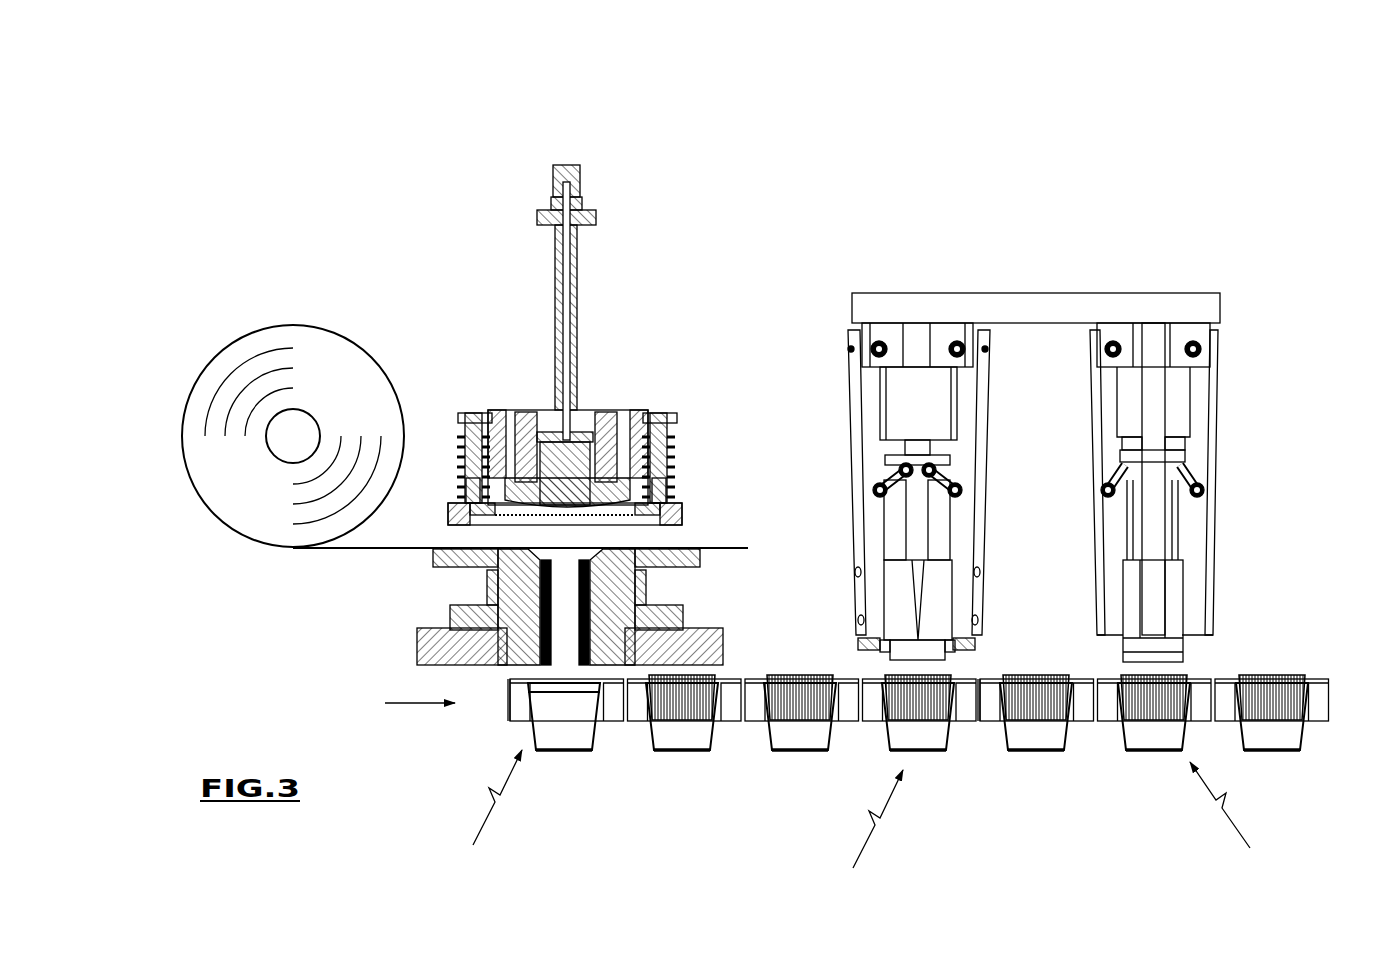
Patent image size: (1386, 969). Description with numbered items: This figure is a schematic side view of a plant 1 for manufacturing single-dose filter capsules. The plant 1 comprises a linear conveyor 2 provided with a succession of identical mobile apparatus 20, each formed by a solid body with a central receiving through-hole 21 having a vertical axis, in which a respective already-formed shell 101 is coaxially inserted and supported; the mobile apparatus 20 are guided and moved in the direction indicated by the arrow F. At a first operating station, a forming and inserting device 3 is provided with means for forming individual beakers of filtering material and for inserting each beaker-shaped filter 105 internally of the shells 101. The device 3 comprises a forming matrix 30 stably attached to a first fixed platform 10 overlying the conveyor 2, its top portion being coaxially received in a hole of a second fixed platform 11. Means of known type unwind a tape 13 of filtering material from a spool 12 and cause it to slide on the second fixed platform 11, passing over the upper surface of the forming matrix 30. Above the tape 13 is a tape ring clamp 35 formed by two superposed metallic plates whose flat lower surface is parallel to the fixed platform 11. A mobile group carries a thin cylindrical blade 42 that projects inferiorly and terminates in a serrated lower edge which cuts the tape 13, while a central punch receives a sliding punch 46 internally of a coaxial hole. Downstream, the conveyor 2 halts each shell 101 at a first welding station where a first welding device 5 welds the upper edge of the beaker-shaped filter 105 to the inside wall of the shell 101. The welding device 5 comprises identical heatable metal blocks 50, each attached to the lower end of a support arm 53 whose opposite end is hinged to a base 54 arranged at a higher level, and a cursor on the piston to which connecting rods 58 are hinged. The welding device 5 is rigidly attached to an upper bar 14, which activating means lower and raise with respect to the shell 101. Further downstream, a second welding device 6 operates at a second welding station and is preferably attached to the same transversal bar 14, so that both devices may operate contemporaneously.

The plant 1 is at (250, 207).
The linear conveyor 2 is at (1297, 653).
The forming and inserting device 3 is at (497, 318).
The first welding device 5 is at (808, 368).
The second welding device 6 is at (1245, 366).
The first fixed platform 10 is at (427, 647).
The second fixed platform 11 is at (700, 563).
The spool 12 is at (315, 345).
The tape 13 is at (358, 548).
The upper bar 14 is at (1040, 300).
The mobile apparatus 20 is at (611, 720).
The receiving through-hole 21 is at (530, 712).
The forming matrix 30 is at (490, 587).
The tape ring clamp 35 is at (683, 512).
The cylindrical blade 42 is at (466, 503).
The sliding punch 46 is at (550, 468).
The heatable metal blocks 50 is at (888, 576).
The support arm 53 is at (852, 446).
The base 54 is at (915, 333).
The connecting rods 58 is at (866, 645).
The shell 101 is at (560, 752).
The beaker-shaped filter 105 is at (805, 678).